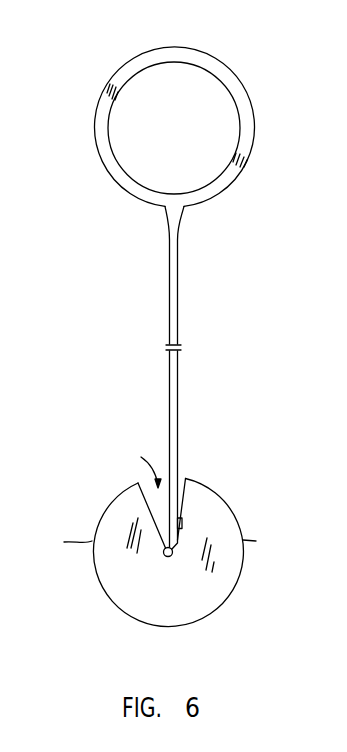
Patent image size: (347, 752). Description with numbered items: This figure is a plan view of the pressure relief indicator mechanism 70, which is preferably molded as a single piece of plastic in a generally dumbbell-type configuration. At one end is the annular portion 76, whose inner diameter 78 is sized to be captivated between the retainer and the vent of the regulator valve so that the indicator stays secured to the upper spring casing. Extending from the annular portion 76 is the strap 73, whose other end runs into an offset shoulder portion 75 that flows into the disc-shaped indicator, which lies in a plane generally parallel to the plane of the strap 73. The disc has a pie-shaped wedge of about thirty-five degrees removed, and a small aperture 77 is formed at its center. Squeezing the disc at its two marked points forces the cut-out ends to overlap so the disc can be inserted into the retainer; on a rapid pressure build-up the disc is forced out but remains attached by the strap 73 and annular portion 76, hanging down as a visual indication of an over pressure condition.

The indicator mechanism 70 is at (124, 288).
The strap 73 is at (178, 287).
The offset shoulder portion 75 is at (182, 528).
The annular portion 76 is at (257, 127).
The aperture 77 is at (173, 557).
The inner diameter 78 is at (211, 76).